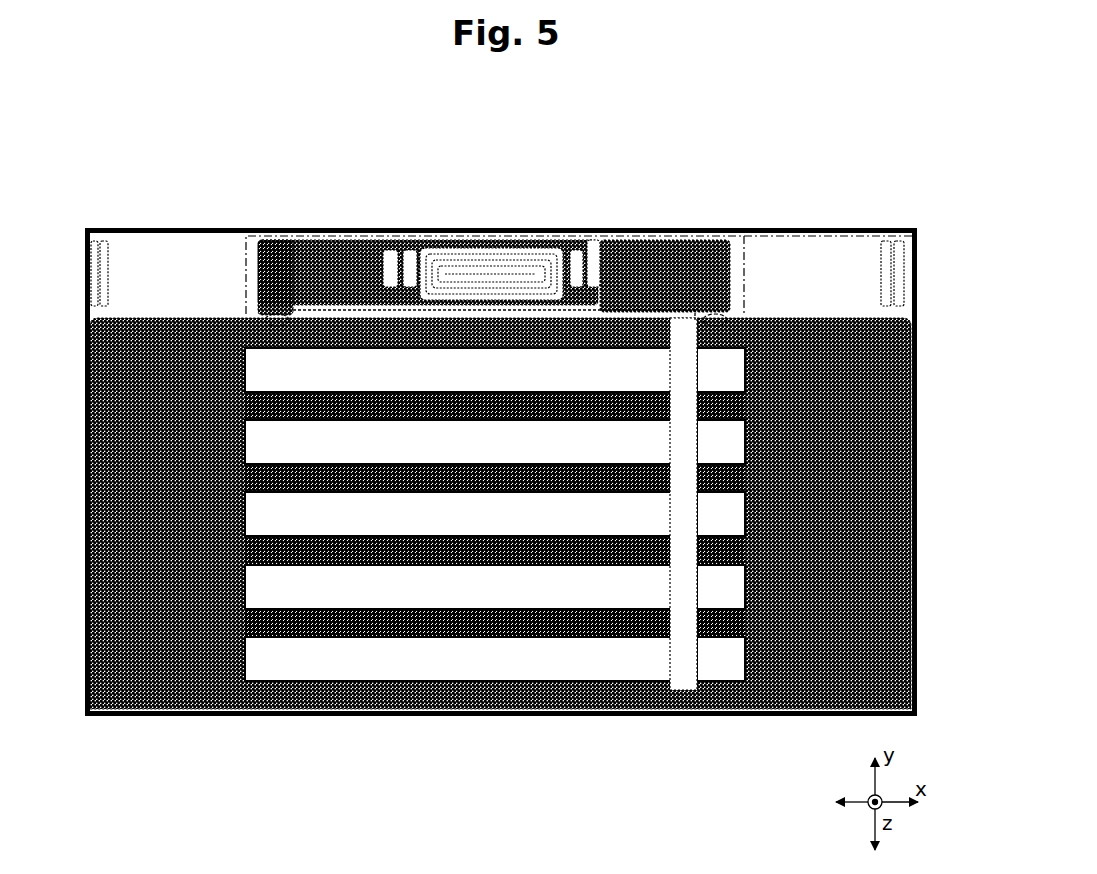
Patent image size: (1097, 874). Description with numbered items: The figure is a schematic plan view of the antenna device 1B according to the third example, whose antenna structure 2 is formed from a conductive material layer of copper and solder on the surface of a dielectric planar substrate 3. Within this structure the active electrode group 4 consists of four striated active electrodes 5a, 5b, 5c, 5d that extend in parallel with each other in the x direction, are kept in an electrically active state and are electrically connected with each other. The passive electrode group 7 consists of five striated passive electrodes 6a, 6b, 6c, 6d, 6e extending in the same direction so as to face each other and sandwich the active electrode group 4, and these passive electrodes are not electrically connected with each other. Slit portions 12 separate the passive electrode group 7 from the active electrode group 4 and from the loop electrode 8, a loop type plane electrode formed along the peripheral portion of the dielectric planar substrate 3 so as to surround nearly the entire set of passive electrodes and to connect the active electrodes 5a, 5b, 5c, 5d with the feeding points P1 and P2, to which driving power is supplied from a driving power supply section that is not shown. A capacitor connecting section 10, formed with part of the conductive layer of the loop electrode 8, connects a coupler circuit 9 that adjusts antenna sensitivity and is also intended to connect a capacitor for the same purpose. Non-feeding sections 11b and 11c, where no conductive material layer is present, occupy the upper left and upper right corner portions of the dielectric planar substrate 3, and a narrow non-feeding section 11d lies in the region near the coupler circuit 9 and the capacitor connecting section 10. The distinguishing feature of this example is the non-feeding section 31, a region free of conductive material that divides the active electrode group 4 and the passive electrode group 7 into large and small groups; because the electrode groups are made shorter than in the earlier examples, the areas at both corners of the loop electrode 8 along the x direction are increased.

The antenna device 1B is at (903, 203).
The antenna structure 2 is at (757, 274).
The dielectric planar substrate 3 is at (86, 241).
The active electrode group 4 is at (628, 626).
The active electrode 5a is at (265, 410).
The active electrode 5b is at (265, 482).
The active electrode 5c is at (265, 552).
The active electrode 5d is at (265, 622).
The passive electrode 6a is at (735, 371).
The passive electrode 6b is at (735, 443).
The passive electrode 6c is at (735, 514).
The passive electrode 6d is at (735, 586).
The passive electrode 6e is at (735, 651).
The passive electrode group 7 is at (428, 658).
The loop electrode 8 is at (178, 697).
The coupler circuit 9 is at (537, 237).
The capacitor connecting section 10 is at (406, 235).
The non-feeding section 11b is at (133, 265).
The non-feeding section 11c is at (836, 265).
The non-feeding section 11d is at (338, 310).
The slit portion 12 is at (245, 371).
The non-feeding section 31 is at (681, 665).
The feeding point P1 is at (277, 314).
The feeding point P2 is at (716, 314).